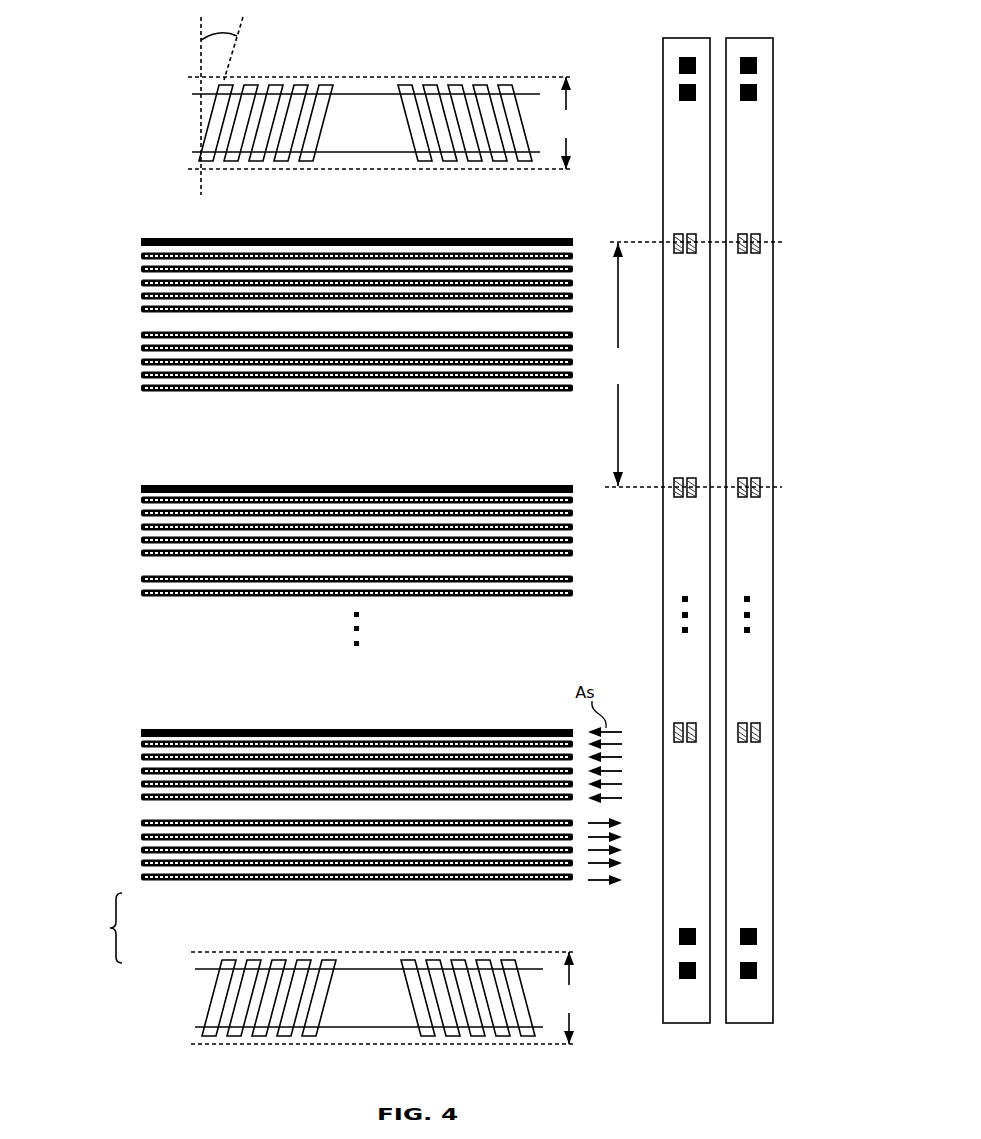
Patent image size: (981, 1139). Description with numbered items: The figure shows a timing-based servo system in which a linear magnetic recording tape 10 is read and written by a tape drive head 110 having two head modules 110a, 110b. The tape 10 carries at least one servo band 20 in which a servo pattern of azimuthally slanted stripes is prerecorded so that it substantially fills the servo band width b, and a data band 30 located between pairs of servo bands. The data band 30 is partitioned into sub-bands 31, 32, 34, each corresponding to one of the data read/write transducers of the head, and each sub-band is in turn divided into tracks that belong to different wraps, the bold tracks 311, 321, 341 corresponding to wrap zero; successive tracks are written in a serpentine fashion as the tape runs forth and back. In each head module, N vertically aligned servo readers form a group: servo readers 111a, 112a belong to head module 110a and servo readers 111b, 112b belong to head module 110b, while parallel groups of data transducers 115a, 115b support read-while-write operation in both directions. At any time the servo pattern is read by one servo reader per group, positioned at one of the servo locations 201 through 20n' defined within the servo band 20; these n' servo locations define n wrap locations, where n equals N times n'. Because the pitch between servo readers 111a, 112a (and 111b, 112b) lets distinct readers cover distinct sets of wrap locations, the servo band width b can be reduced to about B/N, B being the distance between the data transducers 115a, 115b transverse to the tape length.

The linear recording tape 10 is at (76, 905).
The servo band 20 is at (336, 528).
The servo location 201 is at (368, 93).
The servo location 20n' is at (366, 178).
The data band 30 is at (67, 240).
The sub-band 31 is at (122, 240).
The sub-band 32 is at (122, 483).
The sub-band 34 is at (122, 883).
The track of wrap zero 311 is at (157, 238).
The track of wrap zero 321 is at (157, 485).
The track of wrap zero 341 is at (160, 729).
The head 110 is at (790, 616).
The head module 110a is at (688, 1020).
The head module 110b is at (748, 1020).
The servo reader 111a is at (679, 62).
The servo reader 111b is at (757, 62).
The servo reader 112a is at (679, 92).
The servo reader 112b is at (757, 92).
The data read/write transducers 115a is at (676, 236).
The data read/write transducers 115b is at (760, 236).